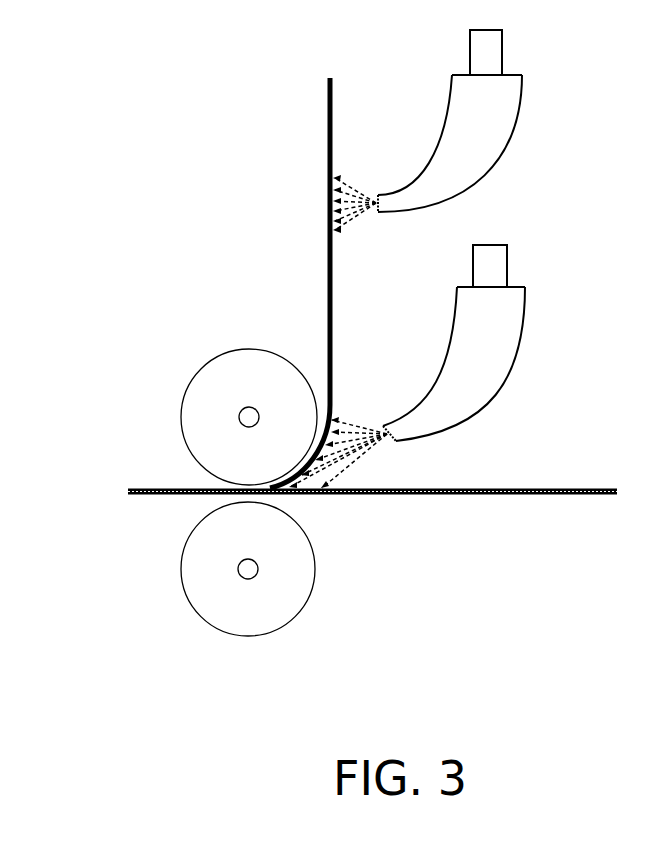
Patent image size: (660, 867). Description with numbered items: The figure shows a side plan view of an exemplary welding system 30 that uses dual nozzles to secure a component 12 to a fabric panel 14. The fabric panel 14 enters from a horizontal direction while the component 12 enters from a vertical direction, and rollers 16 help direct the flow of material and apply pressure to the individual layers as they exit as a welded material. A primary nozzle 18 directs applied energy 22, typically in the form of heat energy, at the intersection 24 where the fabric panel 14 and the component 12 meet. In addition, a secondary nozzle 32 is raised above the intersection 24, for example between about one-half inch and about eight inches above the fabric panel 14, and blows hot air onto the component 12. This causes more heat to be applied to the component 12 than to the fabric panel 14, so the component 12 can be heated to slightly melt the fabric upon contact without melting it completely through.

The component 12 is at (335, 98).
The fabric panel 14 is at (508, 497).
The rollers 16 is at (210, 410).
The primary nozzle 18 is at (497, 342).
The applied energy 22 is at (388, 458).
The intersection 24 is at (333, 466).
The system 30 is at (246, 158).
The secondary nozzle 32 is at (503, 112).